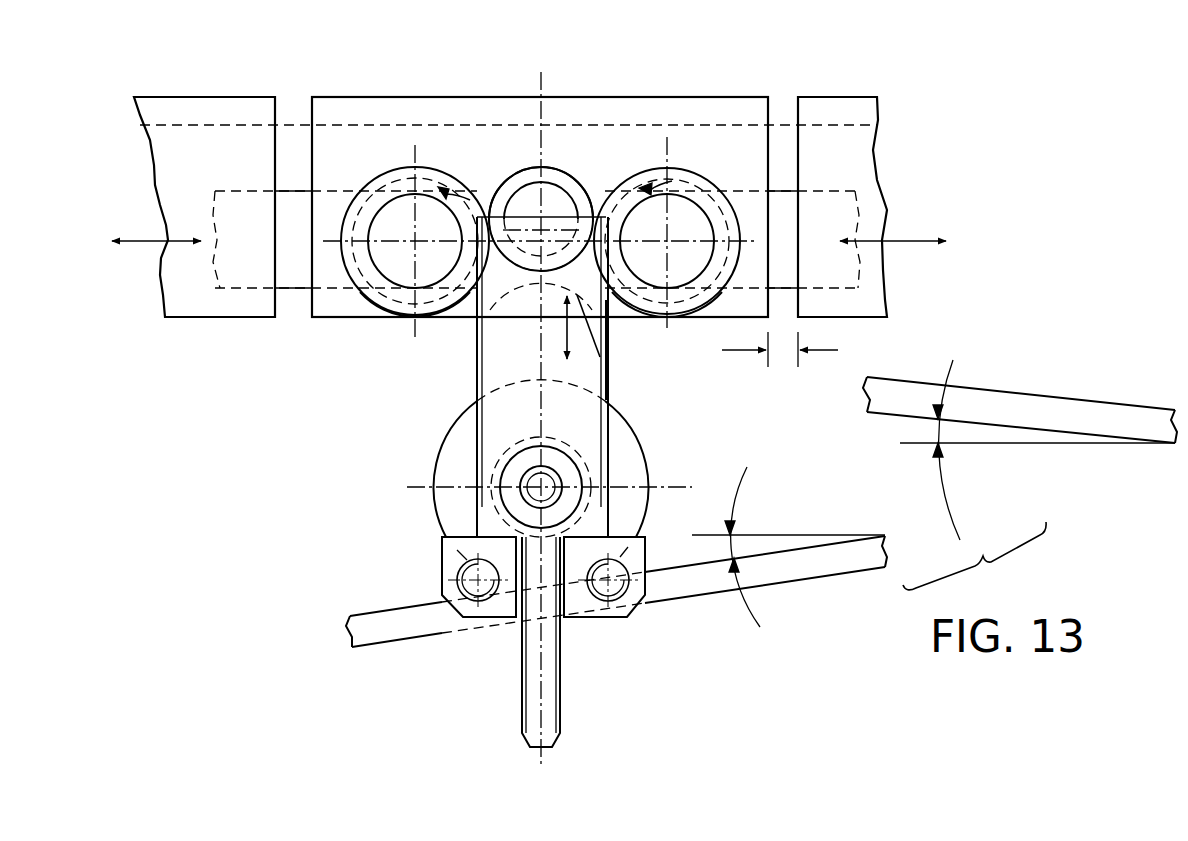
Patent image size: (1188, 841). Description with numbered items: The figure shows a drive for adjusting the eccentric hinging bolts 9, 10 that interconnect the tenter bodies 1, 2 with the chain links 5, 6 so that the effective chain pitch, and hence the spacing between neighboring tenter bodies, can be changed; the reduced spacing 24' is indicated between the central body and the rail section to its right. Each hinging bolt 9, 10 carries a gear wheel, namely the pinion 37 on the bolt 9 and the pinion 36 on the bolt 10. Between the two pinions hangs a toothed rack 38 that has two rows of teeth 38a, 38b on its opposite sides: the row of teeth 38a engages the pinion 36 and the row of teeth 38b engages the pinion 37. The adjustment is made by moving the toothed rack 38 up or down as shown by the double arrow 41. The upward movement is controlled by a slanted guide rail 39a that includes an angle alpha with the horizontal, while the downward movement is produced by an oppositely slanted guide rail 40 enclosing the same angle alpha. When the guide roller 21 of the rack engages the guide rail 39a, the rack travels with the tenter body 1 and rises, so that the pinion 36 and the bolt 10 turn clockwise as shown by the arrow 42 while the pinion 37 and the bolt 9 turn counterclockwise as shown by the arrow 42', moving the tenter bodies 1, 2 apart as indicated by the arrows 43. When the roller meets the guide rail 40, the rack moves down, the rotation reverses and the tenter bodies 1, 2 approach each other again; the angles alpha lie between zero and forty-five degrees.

The tenter body 1 is at (600, 153).
The tenter body 2 is at (250, 150).
The chain link 5 is at (299, 205).
The chain link 6 is at (788, 205).
The hinging bolt 9 is at (437, 220).
The hinging bolt 10 is at (688, 213).
The guide roller 21 is at (625, 470).
The reduced spacing 24' is at (780, 349).
The gear wheel 36 is at (686, 315).
The gear wheel 37 is at (397, 287).
The toothed rack 38 is at (612, 372).
The row of teeth 38a is at (612, 335).
The row of teeth 38b is at (474, 332).
The slanted guide rail 39a is at (667, 592).
The slanted guide rail 40 is at (1118, 415).
The double arrow 41 is at (565, 336).
The arrow 42 is at (643, 114).
The arrow 42' is at (465, 115).
The arrows 43 is at (155, 177).